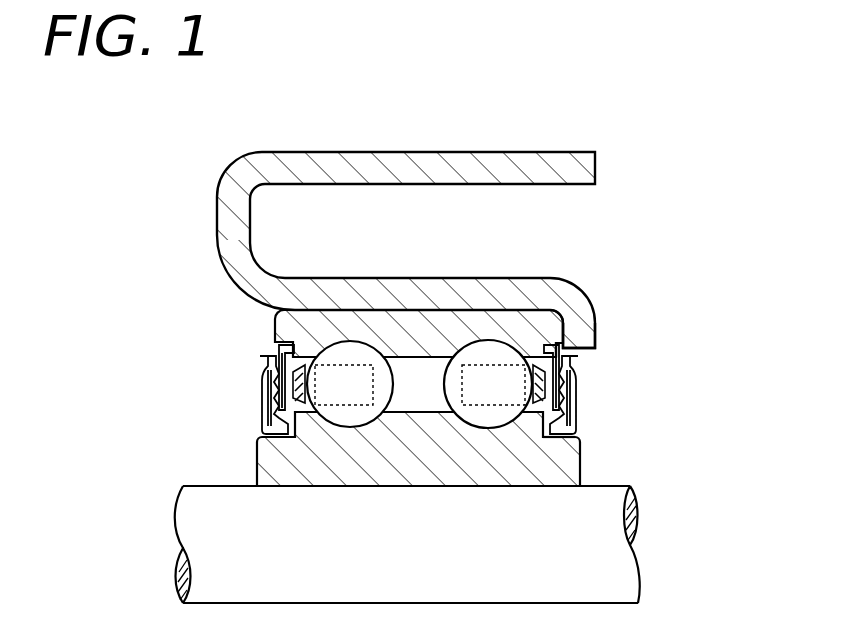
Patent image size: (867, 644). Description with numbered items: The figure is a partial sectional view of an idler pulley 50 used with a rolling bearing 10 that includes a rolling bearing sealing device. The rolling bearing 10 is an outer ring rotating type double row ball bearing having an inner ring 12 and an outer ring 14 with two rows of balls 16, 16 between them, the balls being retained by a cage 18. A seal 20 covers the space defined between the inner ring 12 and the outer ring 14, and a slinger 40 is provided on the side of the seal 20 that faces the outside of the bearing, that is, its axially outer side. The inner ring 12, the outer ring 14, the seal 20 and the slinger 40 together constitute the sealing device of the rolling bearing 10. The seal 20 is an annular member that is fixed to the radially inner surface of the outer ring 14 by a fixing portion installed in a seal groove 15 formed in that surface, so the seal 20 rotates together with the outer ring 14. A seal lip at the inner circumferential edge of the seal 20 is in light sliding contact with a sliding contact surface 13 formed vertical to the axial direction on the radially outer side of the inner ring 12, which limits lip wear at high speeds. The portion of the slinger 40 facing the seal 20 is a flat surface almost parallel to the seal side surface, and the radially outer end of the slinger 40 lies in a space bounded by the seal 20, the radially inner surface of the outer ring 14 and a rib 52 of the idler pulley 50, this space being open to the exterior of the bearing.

The rolling bearing 10 is at (416, 476).
The inner ring 12 is at (263, 452).
The sliding contact surface 13 is at (553, 443).
The outer ring 14 is at (276, 328).
The seal groove 15 is at (578, 357).
The ball 16 is at (353, 413).
The cage 18 is at (301, 417).
The seal 20 is at (262, 356).
The slinger 40 is at (258, 372).
The idler pulley 50 is at (361, 148).
The rib 52 is at (585, 330).